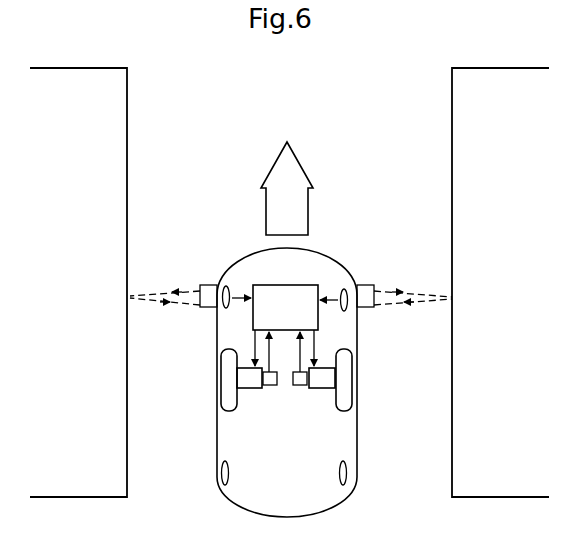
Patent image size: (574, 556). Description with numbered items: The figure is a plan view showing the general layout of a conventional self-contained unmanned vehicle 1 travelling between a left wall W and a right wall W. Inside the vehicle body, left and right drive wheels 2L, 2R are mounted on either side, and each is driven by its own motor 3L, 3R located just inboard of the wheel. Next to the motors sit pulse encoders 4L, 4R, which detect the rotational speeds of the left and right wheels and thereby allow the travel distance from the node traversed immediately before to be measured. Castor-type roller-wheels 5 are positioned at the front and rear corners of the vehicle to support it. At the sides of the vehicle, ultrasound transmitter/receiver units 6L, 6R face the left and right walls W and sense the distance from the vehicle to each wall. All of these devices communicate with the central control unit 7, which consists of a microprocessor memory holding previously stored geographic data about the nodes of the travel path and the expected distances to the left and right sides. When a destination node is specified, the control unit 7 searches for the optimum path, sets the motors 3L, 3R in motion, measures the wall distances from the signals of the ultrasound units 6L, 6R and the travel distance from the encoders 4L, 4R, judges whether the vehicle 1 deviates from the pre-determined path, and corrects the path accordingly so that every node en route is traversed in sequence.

The wall W is at (128, 120).
The unmanned vehicle 1 is at (358, 457).
The castor-type roller-wheels 5 is at (226, 285).
The ultrasound receiving unit 6L is at (208, 281).
The ultrasound receiving unit 6R is at (370, 290).
The control unit 7 is at (283, 284).
The left drive wheel 2L is at (224, 372).
The right drive wheel 2R is at (347, 382).
The motor 3L is at (253, 382).
The motor 3R is at (325, 385).
The pulse encoder 4L is at (272, 386).
The pulse encoder 4R is at (300, 385).